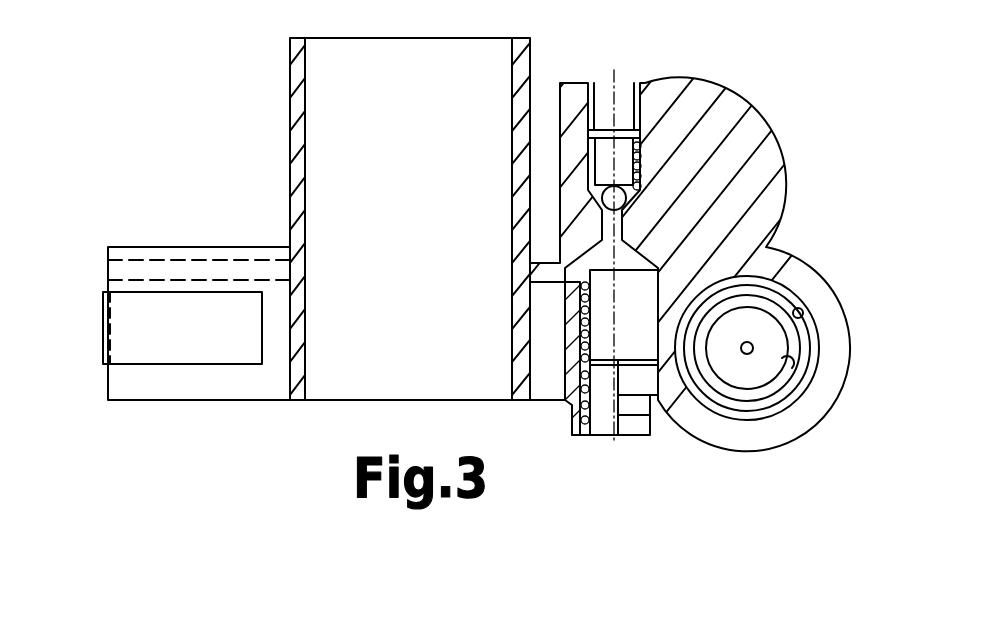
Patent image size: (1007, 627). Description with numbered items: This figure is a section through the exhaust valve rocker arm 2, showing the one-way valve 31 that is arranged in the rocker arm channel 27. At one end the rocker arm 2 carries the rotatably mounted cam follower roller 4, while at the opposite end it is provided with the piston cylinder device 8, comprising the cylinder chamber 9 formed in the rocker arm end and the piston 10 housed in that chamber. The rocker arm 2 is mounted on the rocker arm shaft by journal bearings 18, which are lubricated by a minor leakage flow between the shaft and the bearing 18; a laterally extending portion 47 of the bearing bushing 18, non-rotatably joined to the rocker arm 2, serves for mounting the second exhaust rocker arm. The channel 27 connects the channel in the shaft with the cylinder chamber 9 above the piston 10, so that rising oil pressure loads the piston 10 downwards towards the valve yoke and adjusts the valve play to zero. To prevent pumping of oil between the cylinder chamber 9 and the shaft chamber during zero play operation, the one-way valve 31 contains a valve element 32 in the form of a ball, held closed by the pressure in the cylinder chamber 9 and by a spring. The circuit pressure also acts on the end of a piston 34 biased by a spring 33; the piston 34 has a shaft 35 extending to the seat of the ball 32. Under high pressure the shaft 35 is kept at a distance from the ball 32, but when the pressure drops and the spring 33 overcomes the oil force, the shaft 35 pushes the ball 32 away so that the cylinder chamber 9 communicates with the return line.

The exhaust valve rocker arm 2 is at (206, 406).
The cam follower roller 4 is at (105, 334).
The piston cylinder device 8 is at (796, 414).
The cylinder chamber 9 is at (803, 310).
The piston 10 is at (790, 370).
The journal bearing 18 is at (300, 368).
The channel 27 is at (565, 278).
The one-way valve 31 is at (636, 62).
The valve element 32 is at (602, 192).
The spring 33 is at (580, 336).
The piston 34 is at (560, 396).
The shaft 35 is at (560, 226).
The laterally extending portion 47 is at (290, 128).